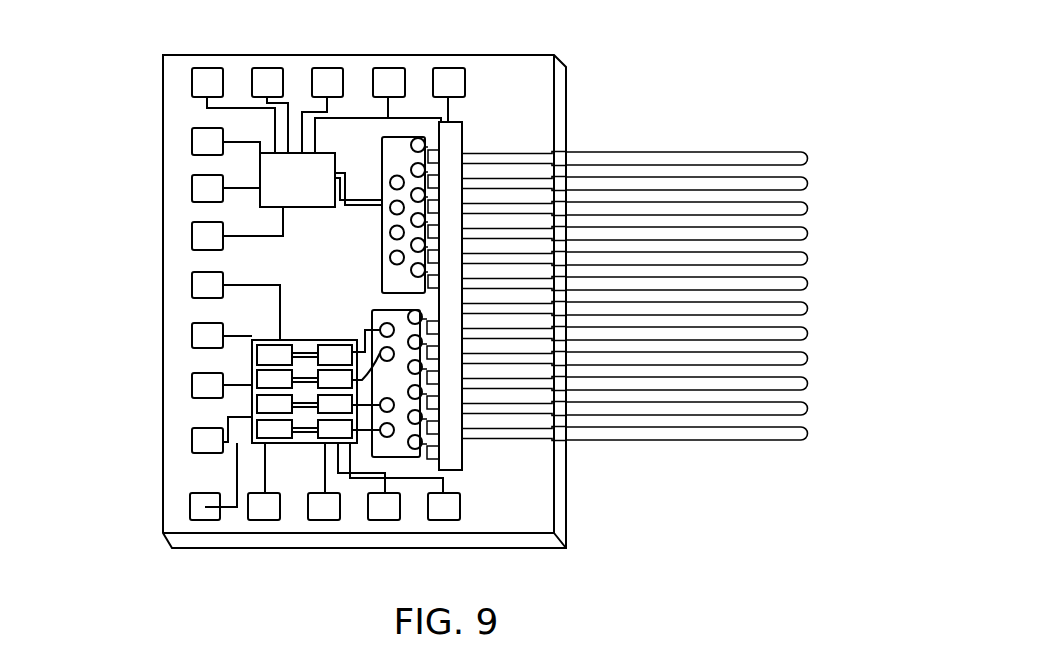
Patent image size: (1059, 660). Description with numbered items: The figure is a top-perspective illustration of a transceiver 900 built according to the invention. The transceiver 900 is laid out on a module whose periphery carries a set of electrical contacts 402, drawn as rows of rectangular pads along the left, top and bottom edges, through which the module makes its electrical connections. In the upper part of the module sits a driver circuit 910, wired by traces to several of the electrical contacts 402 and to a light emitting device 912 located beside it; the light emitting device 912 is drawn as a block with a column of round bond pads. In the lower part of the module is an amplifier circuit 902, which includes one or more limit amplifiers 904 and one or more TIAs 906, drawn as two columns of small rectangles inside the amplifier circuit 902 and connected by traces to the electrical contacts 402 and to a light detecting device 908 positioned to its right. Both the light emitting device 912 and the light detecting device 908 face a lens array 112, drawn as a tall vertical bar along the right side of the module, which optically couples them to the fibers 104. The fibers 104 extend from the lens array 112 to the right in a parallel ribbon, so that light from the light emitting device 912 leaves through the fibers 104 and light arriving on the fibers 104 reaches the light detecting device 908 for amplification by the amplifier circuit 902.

The transceiver 900 is at (135, 215).
The electrical contacts 402 is at (195, 187).
The driver circuit 910 is at (297, 158).
The light emitting device 912 is at (420, 143).
The lens array 112 is at (463, 137).
The fibers 104 is at (750, 152).
The amplifier circuit 902 is at (267, 450).
The limit amplifier 904 is at (268, 430).
The TIA 906 is at (325, 433).
The light detecting device 908 is at (422, 445).